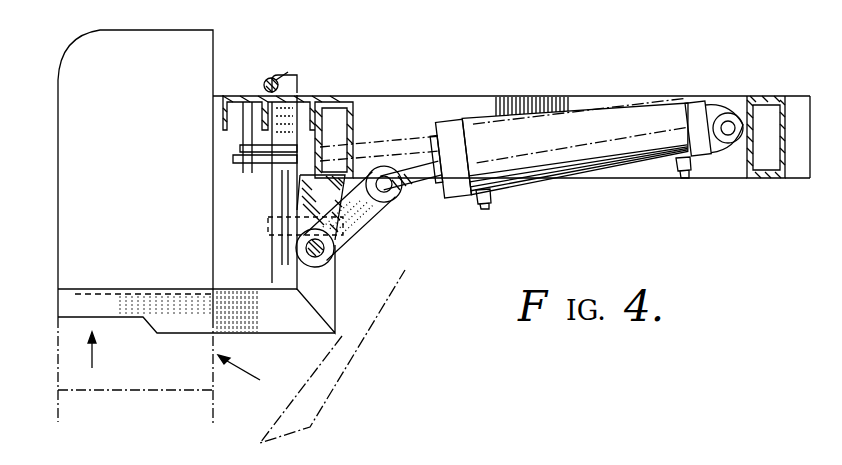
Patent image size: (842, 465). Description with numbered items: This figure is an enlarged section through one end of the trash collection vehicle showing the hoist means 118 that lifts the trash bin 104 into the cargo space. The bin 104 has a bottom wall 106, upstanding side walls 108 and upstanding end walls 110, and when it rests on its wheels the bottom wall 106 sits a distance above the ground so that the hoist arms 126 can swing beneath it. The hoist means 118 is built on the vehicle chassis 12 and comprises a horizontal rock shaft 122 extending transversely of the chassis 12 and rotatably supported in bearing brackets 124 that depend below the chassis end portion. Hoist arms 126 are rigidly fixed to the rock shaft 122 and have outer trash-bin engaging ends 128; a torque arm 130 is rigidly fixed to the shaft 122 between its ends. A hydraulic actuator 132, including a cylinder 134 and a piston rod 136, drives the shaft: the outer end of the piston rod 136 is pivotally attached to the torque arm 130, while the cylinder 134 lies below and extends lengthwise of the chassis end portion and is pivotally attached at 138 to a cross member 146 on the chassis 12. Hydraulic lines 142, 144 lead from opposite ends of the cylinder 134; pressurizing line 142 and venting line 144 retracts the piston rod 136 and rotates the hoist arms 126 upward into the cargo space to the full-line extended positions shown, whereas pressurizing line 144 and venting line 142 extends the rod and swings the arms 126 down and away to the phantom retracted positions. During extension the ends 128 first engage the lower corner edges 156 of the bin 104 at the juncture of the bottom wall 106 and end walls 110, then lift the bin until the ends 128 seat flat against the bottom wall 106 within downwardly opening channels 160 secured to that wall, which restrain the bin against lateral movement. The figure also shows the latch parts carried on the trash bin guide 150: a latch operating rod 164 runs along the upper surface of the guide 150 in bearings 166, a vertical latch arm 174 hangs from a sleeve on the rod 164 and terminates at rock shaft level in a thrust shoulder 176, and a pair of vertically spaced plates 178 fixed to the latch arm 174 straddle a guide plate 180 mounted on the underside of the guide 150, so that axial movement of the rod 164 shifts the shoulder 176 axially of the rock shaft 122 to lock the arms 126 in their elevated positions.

The vehicle chassis 12 is at (547, 97).
The trash bin 104 is at (213, 43).
The bottom wall 106 is at (76, 293).
The side walls 108 is at (203, 58).
The end walls 110 is at (216, 226).
The hoist means 118 is at (405, 270).
The rock shaft 122 is at (330, 250).
The bearing brackets 124 is at (300, 194).
The hoist arms 126 is at (304, 358).
The outer ends 128 is at (178, 328).
The torque arm 130 is at (365, 208).
The hydraulic actuator 132 is at (590, 176).
The cylinder 134 is at (478, 120).
The piston rod 136 is at (432, 192).
The pivotal attachment 138 is at (729, 120).
The hydraulic line 142 is at (492, 202).
The hydraulic line 144 is at (683, 180).
The cross member 146 is at (766, 98).
The trash bin guide 150 is at (222, 117).
The lower corner edges 156 is at (213, 286).
The channels 160 is at (75, 314).
The latch operating rod 164 is at (288, 72).
The bearings 166 is at (275, 78).
The latch arm 174 is at (298, 90).
The thrust shoulder 176 is at (285, 262).
The plates 178 is at (240, 148).
The guide plate 180 is at (236, 161).